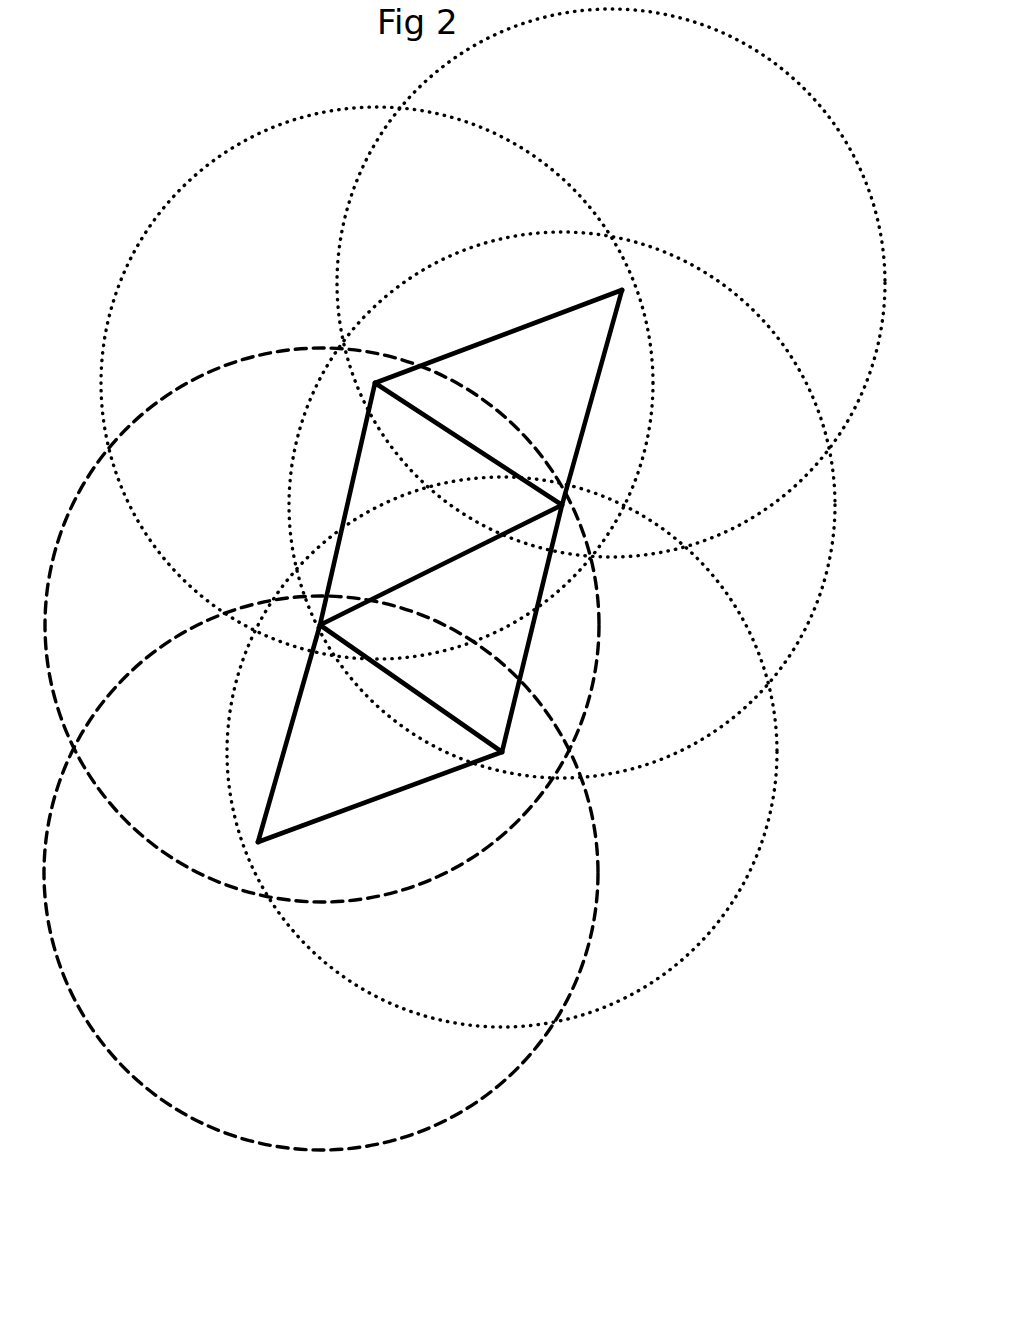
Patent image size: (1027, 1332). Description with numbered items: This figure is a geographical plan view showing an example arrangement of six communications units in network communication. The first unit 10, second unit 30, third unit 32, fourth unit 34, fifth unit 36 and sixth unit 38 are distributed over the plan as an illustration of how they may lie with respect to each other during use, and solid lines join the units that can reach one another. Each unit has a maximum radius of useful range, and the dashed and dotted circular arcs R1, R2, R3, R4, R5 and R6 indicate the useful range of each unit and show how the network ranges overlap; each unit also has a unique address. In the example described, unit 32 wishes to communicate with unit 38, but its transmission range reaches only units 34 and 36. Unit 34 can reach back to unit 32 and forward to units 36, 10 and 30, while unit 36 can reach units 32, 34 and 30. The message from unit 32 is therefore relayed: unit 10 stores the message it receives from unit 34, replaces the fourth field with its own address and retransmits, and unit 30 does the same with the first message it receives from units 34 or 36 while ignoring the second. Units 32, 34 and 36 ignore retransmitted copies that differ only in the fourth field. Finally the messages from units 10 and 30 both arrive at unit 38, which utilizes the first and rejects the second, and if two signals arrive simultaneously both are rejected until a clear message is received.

The first unit 10 is at (355, 413).
The second unit 30 is at (621, 476).
The third unit 32 is at (240, 873).
The fourth unit 34 is at (300, 665).
The fifth unit 36 is at (530, 656).
The sixth unit 38 is at (605, 260).
The transmission range of node 10 R1 is at (661, 388).
The transmission range of node 30 R2 is at (843, 510).
The transmission range of node 32 R3 is at (606, 877).
The transmission range of node 34 R4 is at (608, 633).
The transmission range of node 36 R5 is at (785, 757).
The transmission range of node 38 R6 is at (876, 294).